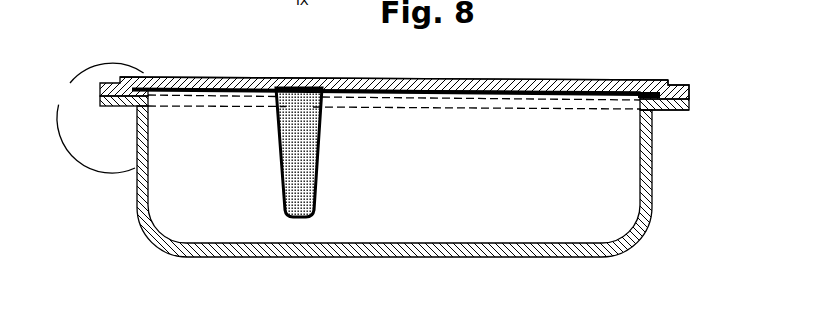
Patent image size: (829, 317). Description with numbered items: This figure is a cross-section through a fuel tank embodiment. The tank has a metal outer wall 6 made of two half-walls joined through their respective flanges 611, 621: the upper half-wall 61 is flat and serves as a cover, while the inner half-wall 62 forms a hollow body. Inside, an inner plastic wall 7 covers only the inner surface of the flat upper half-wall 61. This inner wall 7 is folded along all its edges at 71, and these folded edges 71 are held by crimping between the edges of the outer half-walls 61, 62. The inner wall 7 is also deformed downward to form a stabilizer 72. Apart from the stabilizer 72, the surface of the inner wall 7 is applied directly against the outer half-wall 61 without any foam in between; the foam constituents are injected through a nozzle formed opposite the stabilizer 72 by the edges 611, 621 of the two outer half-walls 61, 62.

The metal outer wall 6 is at (97, 118).
The inner plastic wall 7 is at (505, 80).
The upper half-wall 61 is at (456, 80).
The flange 611 is at (670, 84).
The inner half-wall 62 is at (388, 247).
The flange 621 is at (678, 110).
The folded edges 71 is at (133, 102).
The stabilizer 72 is at (300, 158).